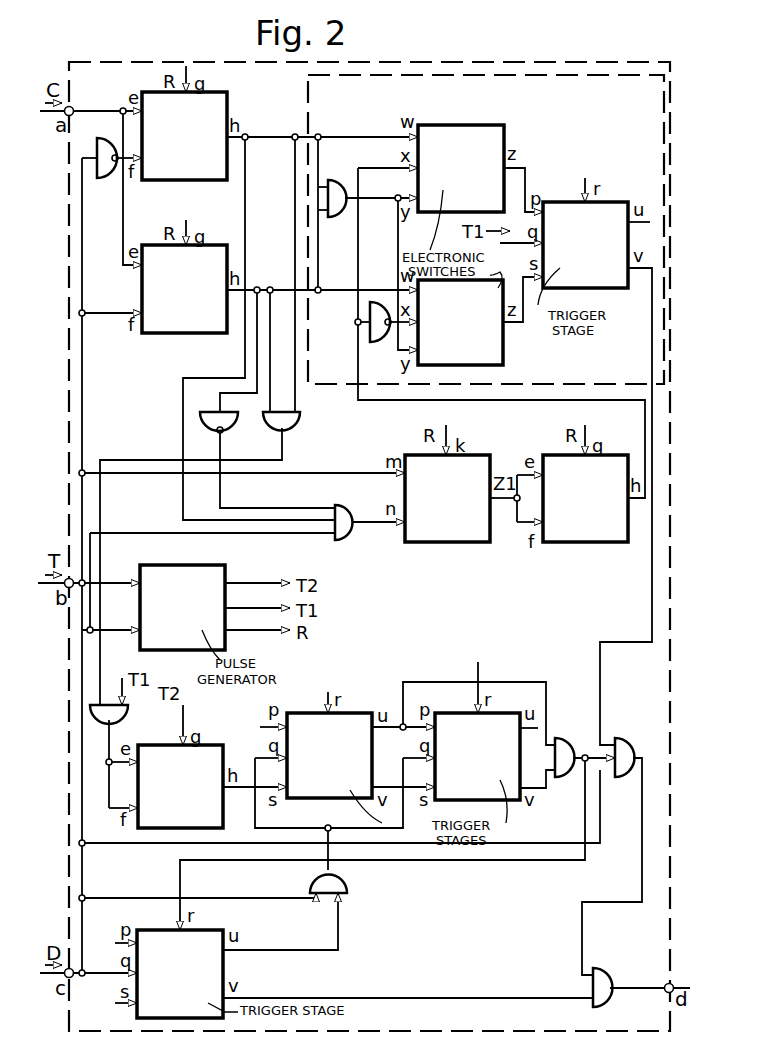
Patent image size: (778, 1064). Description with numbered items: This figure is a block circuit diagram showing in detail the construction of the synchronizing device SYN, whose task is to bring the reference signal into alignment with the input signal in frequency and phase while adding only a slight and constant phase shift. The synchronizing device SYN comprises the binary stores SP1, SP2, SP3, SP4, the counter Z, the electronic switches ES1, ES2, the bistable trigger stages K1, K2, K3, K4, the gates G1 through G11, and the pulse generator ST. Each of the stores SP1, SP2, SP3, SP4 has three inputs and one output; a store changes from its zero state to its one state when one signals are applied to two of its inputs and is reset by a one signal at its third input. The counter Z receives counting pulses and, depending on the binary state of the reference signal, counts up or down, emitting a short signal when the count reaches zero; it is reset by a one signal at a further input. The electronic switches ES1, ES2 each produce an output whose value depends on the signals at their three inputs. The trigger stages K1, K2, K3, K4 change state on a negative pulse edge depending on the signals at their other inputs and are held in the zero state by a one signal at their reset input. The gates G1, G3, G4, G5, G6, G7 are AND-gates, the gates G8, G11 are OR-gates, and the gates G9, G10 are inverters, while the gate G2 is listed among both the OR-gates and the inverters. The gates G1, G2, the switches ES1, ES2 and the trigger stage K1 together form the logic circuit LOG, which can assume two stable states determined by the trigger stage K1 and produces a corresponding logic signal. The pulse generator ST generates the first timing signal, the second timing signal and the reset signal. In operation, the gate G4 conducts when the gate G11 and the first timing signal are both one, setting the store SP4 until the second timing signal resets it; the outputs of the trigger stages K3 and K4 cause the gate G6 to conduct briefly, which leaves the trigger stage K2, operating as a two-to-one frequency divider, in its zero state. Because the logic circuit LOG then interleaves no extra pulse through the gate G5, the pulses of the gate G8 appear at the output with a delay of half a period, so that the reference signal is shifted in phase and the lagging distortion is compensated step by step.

The synchronizing device SYN is at (422, 62).
The logic circuit LOG is at (582, 75).
The store SP1 is at (184, 136).
The store SP2 is at (184, 289).
The store SP3 is at (585, 498).
The store SP4 is at (180, 786).
The electronic switch ES1 is at (461, 168).
The electronic switch ES2 is at (460, 322).
The trigger stage K1 is at (585, 245).
The trigger stage K2 is at (180, 974).
The trigger stage K3 is at (329, 755).
The trigger stage K4 is at (477, 756).
The counter Z is at (447, 498).
The pulse generator ST is at (182, 607).
The AND-gate G1 is at (336, 185).
The gate G2 is at (375, 337).
The AND-gate G3 is at (344, 509).
The AND-gate G4 is at (122, 720).
The AND-gate G5 is at (622, 771).
The AND-gate G6 is at (566, 771).
The AND-gate G7 is at (345, 885).
The OR-gate G8 is at (613, 1000).
The inverter G9 is at (104, 170).
The inverter G10 is at (234, 434).
The OR-gate G11 is at (302, 427).